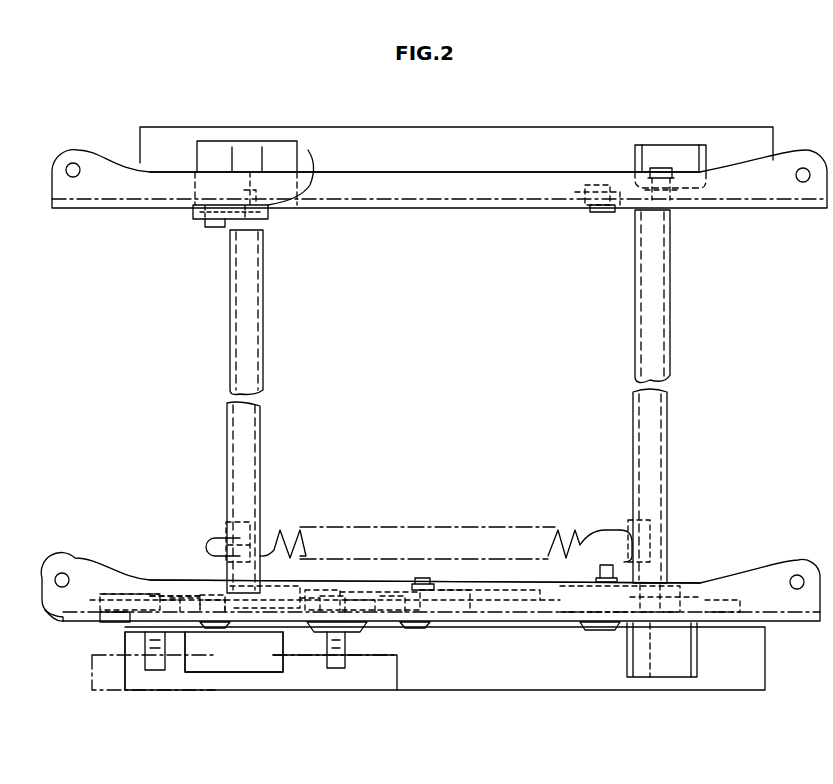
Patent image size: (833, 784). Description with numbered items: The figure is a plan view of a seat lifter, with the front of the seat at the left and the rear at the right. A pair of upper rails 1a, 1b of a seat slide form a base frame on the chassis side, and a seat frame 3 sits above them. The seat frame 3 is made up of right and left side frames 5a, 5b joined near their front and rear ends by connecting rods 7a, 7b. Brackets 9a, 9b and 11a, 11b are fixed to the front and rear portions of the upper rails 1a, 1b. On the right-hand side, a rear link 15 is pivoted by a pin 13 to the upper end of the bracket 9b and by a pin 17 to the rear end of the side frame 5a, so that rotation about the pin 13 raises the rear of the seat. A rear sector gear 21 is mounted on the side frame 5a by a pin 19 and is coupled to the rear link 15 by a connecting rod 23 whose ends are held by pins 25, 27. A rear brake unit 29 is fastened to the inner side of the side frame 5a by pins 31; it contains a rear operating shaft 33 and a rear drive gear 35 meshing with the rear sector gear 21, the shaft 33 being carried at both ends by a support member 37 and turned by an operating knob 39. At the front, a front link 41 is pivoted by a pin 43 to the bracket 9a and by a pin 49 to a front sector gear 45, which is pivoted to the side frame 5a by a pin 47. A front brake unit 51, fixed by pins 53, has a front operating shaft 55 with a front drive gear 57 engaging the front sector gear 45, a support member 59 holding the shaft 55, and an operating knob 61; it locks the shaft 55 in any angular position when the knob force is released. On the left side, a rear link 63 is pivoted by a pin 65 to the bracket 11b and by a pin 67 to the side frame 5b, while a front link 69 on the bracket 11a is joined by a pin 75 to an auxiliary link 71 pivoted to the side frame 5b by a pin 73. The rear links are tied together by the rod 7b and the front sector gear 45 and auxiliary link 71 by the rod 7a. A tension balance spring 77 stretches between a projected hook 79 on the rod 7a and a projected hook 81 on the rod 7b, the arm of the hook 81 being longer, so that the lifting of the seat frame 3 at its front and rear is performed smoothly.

The upper rail 1a is at (524, 690).
The upper rail 1b is at (560, 127).
The seat frame 3 is at (165, 248).
The side frame 5a is at (775, 575).
The side frame 5b is at (805, 192).
The connecting rod 7a is at (265, 330).
The connecting rod 7b is at (670, 290).
The bracket 9a is at (262, 680).
The bracket 9b is at (684, 677).
The bracket 11a is at (218, 150).
The bracket 11b is at (683, 150).
The pin 13 is at (648, 677).
The rear link 15 is at (645, 588).
The pin 17 is at (600, 632).
The pin 19 is at (390, 596).
The rear sector gear 21 is at (358, 600).
The connecting rod 23 is at (455, 590).
The pin 25 is at (605, 565).
The pin 27 is at (422, 578).
The rear brake unit 29 is at (370, 632).
The pins 31 is at (283, 624).
The rear operating shaft 33 is at (335, 668).
The rear drive gear 35 is at (330, 596).
The support member 37 is at (310, 598).
The operating knob 39 is at (352, 690).
The front link 41 is at (185, 598).
The pin 43 is at (212, 598).
The front sector gear 45 is at (170, 600).
The pin 47 is at (235, 672).
The pin 49 is at (205, 595).
The front brake unit 51 is at (115, 622).
The pins 53 is at (55, 618).
The front operating shaft 55 is at (125, 658).
The front drive gear 57 is at (140, 596).
The support member 59 is at (115, 594).
The operating knob 61 is at (180, 685).
The rear link 63 is at (605, 195).
The pin 65 is at (655, 168).
The pin 67 is at (605, 212).
The front link 69 is at (193, 207).
The auxiliary link 71 is at (308, 150).
The pin 73 is at (250, 172).
The pin 75 is at (212, 228).
The balance spring 77 is at (565, 530).
The projected hook 79 is at (240, 520).
The projected hook 81 is at (630, 520).